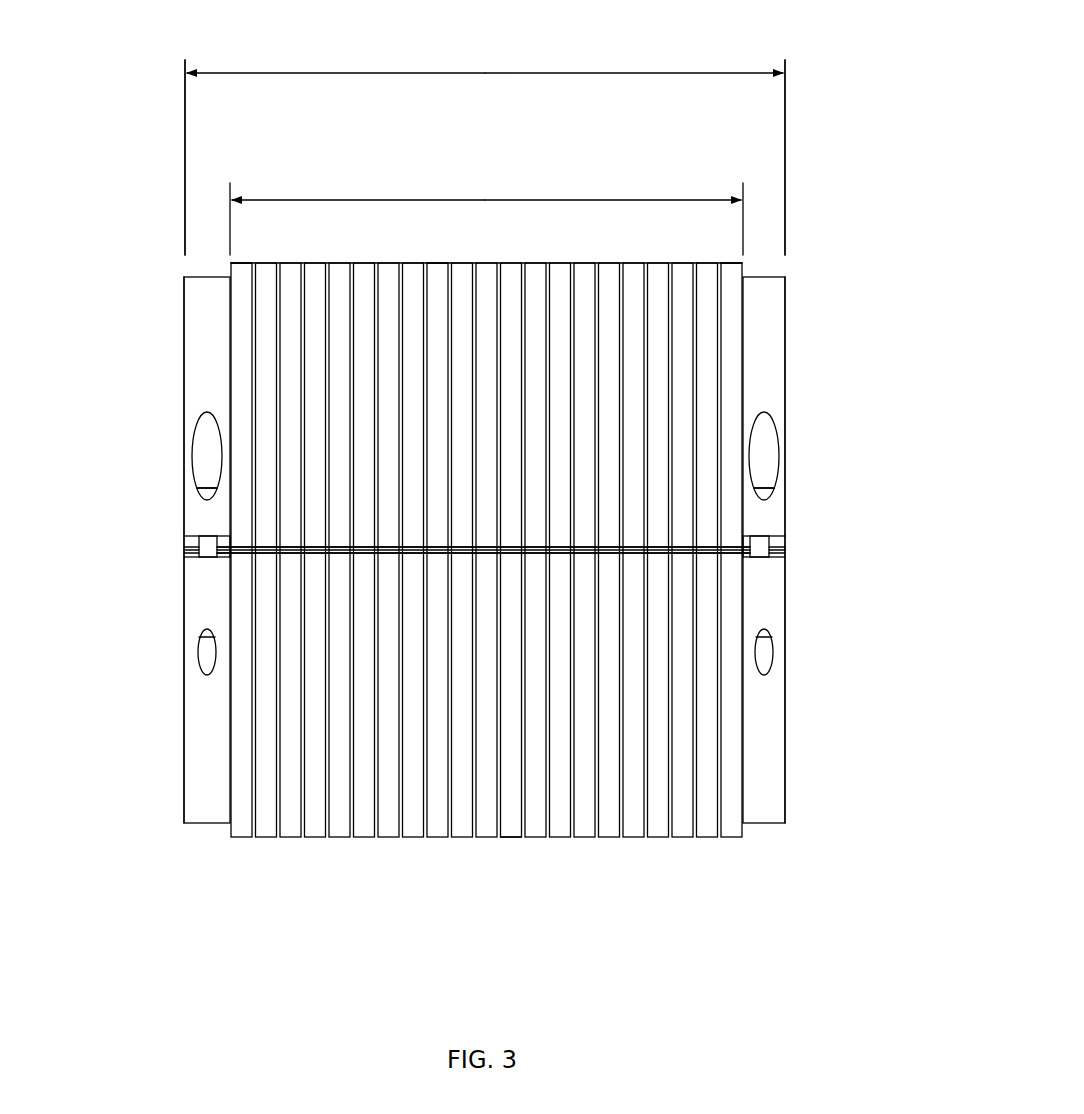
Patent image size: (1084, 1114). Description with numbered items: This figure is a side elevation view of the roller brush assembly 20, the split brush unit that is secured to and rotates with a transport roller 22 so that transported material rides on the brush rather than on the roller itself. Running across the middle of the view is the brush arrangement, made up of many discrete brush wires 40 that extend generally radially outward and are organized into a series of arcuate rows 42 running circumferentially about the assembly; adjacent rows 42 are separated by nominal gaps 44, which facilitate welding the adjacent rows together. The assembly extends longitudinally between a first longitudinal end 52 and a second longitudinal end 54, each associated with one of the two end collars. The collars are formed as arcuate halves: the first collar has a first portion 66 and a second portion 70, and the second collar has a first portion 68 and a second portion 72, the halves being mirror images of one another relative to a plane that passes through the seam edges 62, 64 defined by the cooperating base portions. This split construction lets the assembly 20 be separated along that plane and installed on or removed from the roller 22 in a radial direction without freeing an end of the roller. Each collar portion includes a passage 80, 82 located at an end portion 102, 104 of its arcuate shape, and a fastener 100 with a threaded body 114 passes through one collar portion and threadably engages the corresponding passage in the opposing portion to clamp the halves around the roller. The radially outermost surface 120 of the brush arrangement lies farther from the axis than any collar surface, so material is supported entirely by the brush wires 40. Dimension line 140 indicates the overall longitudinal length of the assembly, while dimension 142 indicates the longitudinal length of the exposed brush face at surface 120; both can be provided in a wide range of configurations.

The roller brush assembly 20 is at (243, 907).
The transport roller 22 is at (563, 251).
The brush wires 40 is at (733, 272).
The rows 42 is at (365, 256).
The gaps 44 is at (291, 256).
The first longitudinal end 52 is at (147, 235).
The second longitudinal end 54 is at (813, 210).
The seam edge 62 is at (785, 554).
The seam edge 64 is at (483, 550).
The first portion of first collar 66 is at (197, 742).
The first portion of second collar 68 is at (767, 807).
The second portion of first collar 70 is at (197, 398).
The second portion of second collar 72 is at (765, 389).
The passage 80 is at (205, 648).
The passage 82 is at (773, 655).
The fastener 100 is at (202, 494).
The end portion 102 is at (153, 591).
The end portion 104 is at (153, 522).
The threaded body 114 is at (785, 548).
The radially outermost surface 120 is at (431, 263).
The overall longitudinal length 140 is at (583, 73).
The longitudinal length of brush face 142 is at (590, 200).